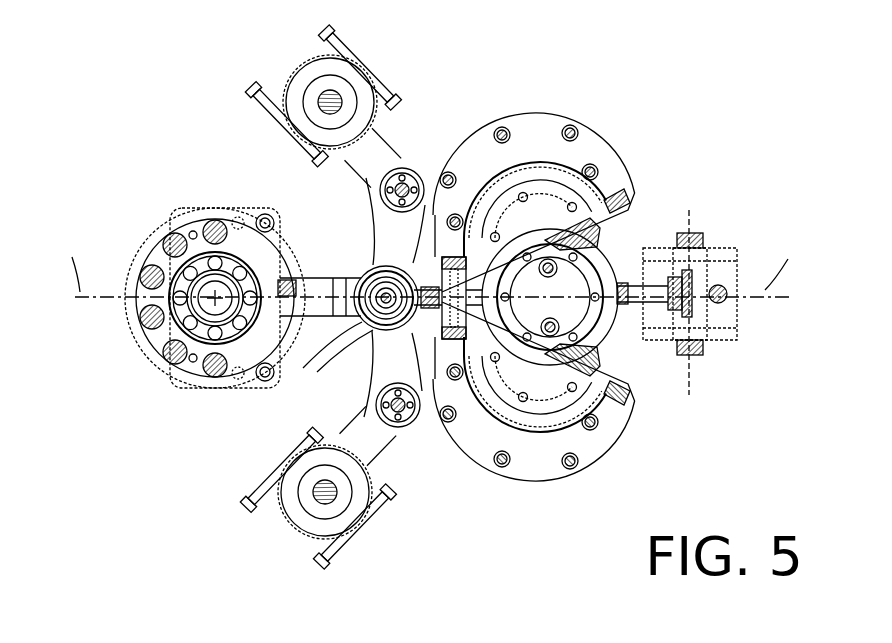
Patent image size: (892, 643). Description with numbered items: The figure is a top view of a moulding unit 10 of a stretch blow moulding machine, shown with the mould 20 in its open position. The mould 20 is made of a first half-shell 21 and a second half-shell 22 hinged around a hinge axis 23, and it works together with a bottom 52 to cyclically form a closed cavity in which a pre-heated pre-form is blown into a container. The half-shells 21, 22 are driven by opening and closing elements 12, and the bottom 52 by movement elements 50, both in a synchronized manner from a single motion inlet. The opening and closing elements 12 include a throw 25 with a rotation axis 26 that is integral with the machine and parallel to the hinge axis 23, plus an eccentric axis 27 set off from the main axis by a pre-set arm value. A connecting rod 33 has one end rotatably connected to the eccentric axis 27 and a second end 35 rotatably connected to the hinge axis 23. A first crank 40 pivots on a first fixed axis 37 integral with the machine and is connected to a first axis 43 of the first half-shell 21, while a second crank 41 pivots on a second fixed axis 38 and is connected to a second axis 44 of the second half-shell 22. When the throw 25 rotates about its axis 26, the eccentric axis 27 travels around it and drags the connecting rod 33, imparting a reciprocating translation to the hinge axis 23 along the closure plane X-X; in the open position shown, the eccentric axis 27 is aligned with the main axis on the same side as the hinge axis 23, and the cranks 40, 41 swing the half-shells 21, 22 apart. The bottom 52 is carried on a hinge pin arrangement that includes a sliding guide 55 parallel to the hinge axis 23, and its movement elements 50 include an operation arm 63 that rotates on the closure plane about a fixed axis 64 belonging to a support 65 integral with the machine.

The moulding unit 10 is at (650, 95).
The opening and closing elements 12 is at (260, 177).
The mould 20 is at (585, 271).
The first half-shell 21 is at (588, 468).
The second half-shell 22 is at (548, 112).
The hinge axis 23 is at (313, 353).
The throw 25 is at (199, 297).
The rotation axis 26 is at (188, 332).
The eccentric axis 27 is at (223, 388).
The connecting rod 33 is at (315, 293).
The second end 35 is at (356, 276).
The first fixed axis 37 is at (267, 507).
The second fixed axis 38 is at (298, 85).
The first crank 40 is at (385, 430).
The second crank 41 is at (378, 148).
The first axis 43 is at (451, 452).
The second axis 44 is at (417, 177).
The movement elements 50 is at (712, 270).
The bottom 52 is at (590, 273).
The sliding guide 55 is at (378, 330).
The operation arm 63 is at (637, 312).
The fixed axis 64 is at (693, 388).
The support 65 is at (718, 343).